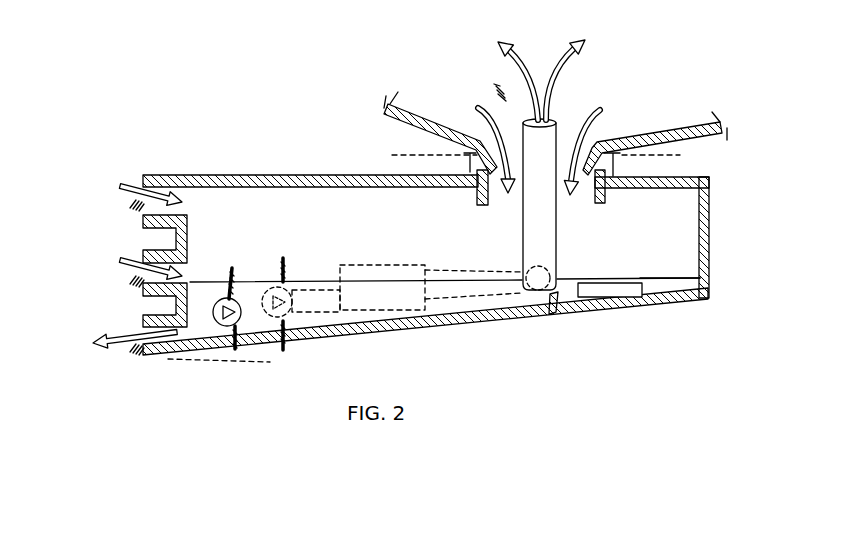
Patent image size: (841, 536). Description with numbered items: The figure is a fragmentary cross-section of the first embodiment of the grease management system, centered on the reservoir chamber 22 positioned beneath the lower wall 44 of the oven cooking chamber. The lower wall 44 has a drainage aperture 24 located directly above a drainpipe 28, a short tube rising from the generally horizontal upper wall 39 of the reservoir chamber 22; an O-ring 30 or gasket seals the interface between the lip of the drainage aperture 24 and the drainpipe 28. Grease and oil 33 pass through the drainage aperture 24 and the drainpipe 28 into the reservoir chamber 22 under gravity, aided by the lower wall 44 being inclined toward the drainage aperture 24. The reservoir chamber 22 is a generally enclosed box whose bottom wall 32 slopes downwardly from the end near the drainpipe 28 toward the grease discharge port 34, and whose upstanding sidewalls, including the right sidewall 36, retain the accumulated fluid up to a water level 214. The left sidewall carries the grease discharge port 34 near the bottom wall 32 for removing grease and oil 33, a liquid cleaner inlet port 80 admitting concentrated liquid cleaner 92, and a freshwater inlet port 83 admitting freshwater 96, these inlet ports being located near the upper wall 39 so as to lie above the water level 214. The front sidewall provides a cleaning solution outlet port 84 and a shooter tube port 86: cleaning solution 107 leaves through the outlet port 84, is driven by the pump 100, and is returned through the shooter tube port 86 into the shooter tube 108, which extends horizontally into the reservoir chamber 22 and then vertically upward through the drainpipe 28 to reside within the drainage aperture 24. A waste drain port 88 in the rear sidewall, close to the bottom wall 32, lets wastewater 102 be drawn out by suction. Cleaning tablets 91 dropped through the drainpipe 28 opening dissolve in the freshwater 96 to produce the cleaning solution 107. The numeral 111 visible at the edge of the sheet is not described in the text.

The reservoir chamber 22 is at (223, 145).
The drainage aperture 24 is at (500, 85).
The drainpipe 28 is at (617, 173).
The O-ring 30 is at (470, 170).
The bottom wall 32 is at (498, 320).
The grease and oil 33 is at (125, 333).
The grease discharge port 34 is at (128, 348).
The right sidewall 36 is at (711, 230).
The upper wall 39 is at (270, 176).
The lower wall 44 is at (675, 128).
The liquid cleaner inlet port 80 is at (128, 280).
The freshwater inlet port 83 is at (128, 206).
The cleaning solution outlet port 84 is at (283, 350).
The shooter tube port 86 is at (552, 298).
The waste drain port 88 is at (235, 350).
The cleaning tablets 91 is at (700, 313).
The concentrated liquid cleaner 92 is at (122, 262).
The freshwater 96 is at (122, 186).
The pump 100 is at (407, 288).
The wastewater 102 is at (232, 268).
The cleaning solution 107 is at (565, 73).
The shooter tube 108 is at (546, 234).
The water level 214 is at (663, 277).
The element 111 is at (128, 533).